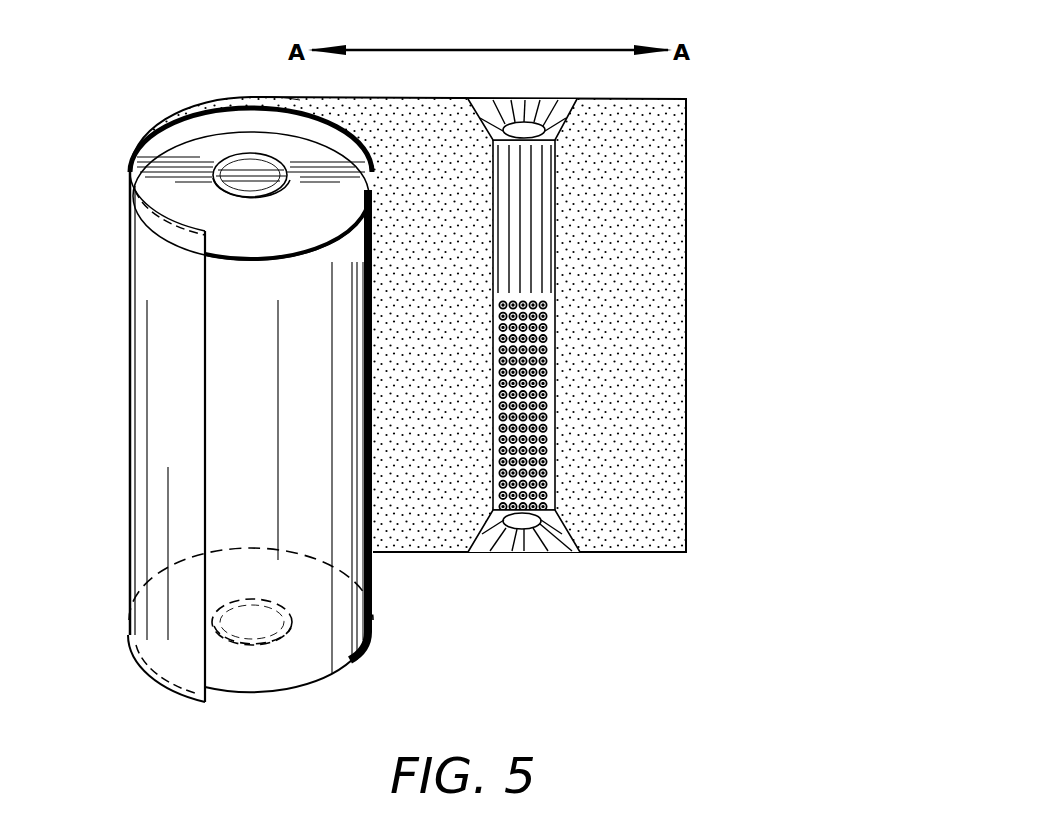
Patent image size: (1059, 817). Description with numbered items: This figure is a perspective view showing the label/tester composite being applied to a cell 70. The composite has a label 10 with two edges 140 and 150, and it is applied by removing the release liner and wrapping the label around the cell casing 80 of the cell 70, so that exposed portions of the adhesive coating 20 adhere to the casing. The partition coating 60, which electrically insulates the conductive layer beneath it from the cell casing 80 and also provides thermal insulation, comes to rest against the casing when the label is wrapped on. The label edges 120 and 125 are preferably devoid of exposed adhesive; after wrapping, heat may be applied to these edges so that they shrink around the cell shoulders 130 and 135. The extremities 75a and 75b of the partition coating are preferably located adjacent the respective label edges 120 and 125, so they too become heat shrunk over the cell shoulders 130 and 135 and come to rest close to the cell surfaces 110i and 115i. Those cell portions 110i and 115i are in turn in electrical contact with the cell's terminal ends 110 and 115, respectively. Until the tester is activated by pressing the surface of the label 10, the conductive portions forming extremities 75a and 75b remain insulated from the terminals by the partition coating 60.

The label 10 is at (152, 387).
The adhesive coating 20 is at (611, 298).
The partition coating 60 is at (556, 176).
The cell 70 is at (320, 690).
The extremity 75a is at (524, 118).
The extremity 75b is at (521, 530).
The cell casing 80 is at (374, 611).
The terminal end 110 is at (252, 188).
The cell surface 110i is at (250, 128).
The terminal end 115 is at (258, 650).
The cell surface 115i is at (272, 672).
The label edge 120 is at (157, 127).
The label edge 125 is at (150, 677).
The cell shoulder 130 is at (367, 150).
The cell shoulder 135 is at (356, 658).
The edge 140 is at (207, 427).
The edge 150 is at (686, 233).